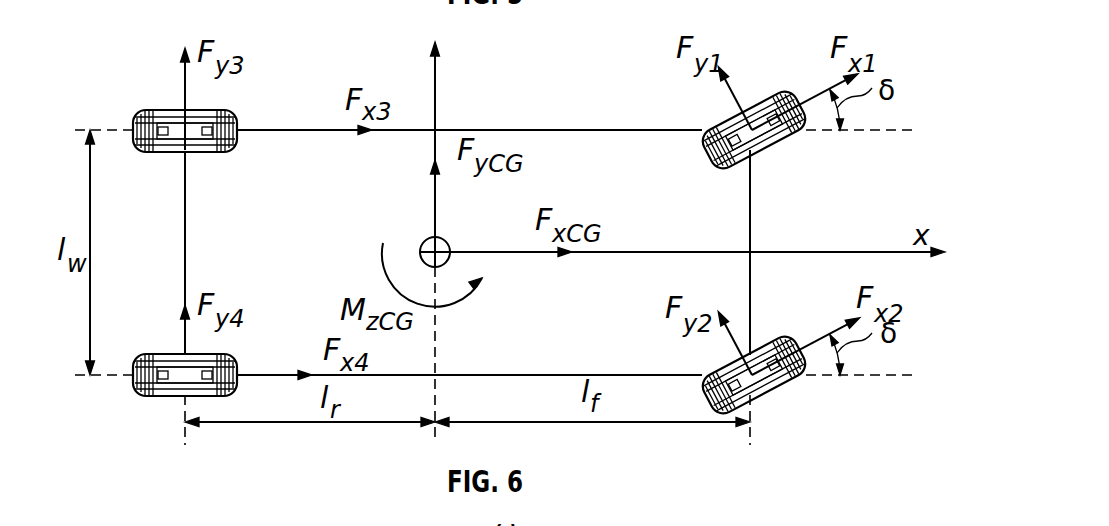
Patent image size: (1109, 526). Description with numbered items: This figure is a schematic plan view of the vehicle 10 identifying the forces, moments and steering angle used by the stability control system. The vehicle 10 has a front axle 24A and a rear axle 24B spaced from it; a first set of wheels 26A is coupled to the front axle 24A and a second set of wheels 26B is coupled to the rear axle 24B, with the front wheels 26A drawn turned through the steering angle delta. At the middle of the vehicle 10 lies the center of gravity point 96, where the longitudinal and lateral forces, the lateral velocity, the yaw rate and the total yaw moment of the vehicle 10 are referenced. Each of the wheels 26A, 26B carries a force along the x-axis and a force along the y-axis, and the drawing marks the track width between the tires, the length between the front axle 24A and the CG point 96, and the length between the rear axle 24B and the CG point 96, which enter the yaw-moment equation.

The vehicle 10 is at (878, 16).
The front axle 24A is at (752, 238).
The rear axle 24B is at (187, 230).
The first set of wheels 26A is at (773, 145).
The second set of wheels 26B is at (158, 152).
The center of gravity point 96 is at (446, 242).